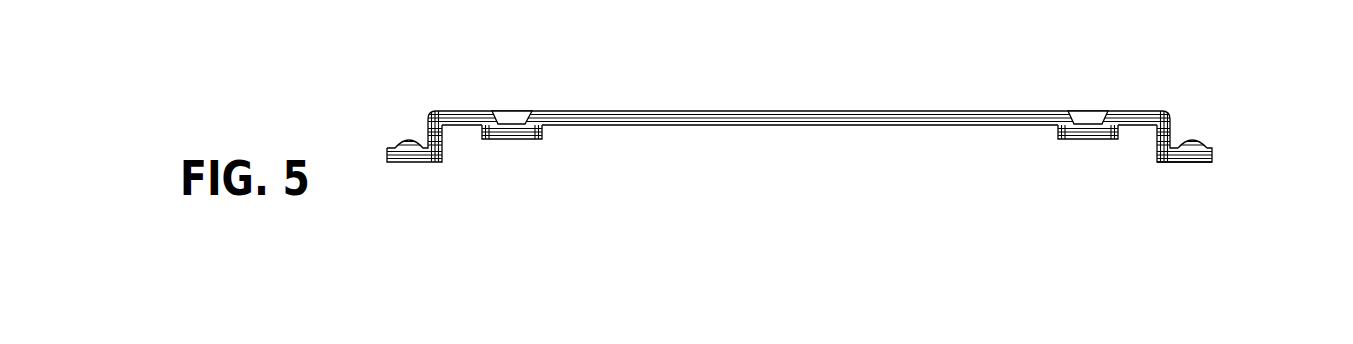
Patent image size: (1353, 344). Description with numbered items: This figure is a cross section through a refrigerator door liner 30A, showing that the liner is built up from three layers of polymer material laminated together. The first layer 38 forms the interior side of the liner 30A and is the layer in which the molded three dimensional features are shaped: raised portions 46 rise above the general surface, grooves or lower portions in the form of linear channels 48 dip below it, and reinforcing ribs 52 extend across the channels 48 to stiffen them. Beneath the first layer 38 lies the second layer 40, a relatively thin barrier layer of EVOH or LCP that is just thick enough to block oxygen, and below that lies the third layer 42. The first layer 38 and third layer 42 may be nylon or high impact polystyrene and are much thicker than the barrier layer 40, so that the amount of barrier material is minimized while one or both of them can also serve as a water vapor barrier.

The liner 30A is at (940, 126).
The first layer of polymer material 38 is at (1212, 148).
The second layer of polymer material 40 is at (1212, 156).
The third layer of polymer material 42 is at (1212, 162).
The raised portion 46 is at (460, 110).
The linear channel 48 is at (512, 114).
The reinforcing rib 52 is at (523, 112).